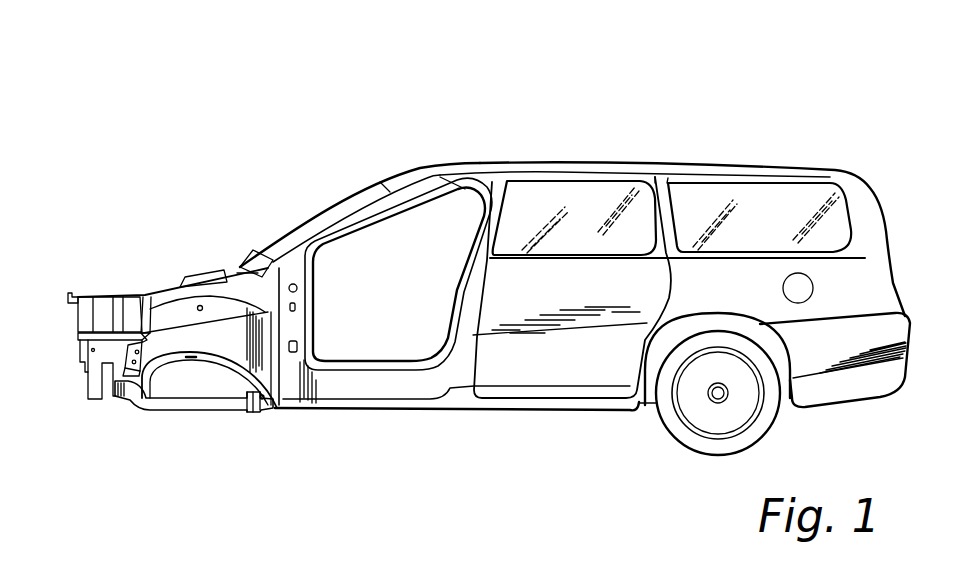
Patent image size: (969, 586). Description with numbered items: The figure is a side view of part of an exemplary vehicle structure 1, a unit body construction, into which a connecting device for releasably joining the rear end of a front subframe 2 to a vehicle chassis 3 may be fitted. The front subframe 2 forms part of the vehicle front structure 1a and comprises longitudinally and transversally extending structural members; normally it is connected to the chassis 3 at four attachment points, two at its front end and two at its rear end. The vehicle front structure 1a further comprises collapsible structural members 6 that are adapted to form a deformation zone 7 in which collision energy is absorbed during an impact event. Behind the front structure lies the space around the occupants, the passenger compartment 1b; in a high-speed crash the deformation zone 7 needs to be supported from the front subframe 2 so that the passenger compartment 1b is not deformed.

The vehicle structure 1 is at (467, 304).
The vehicle front structure 1a is at (150, 365).
The passenger compartment 1b is at (573, 290).
The front subframe 2 is at (196, 411).
The vehicle chassis 3 is at (363, 393).
The collapsible structural members 6 is at (100, 350).
The deformation zone 7 is at (108, 270).